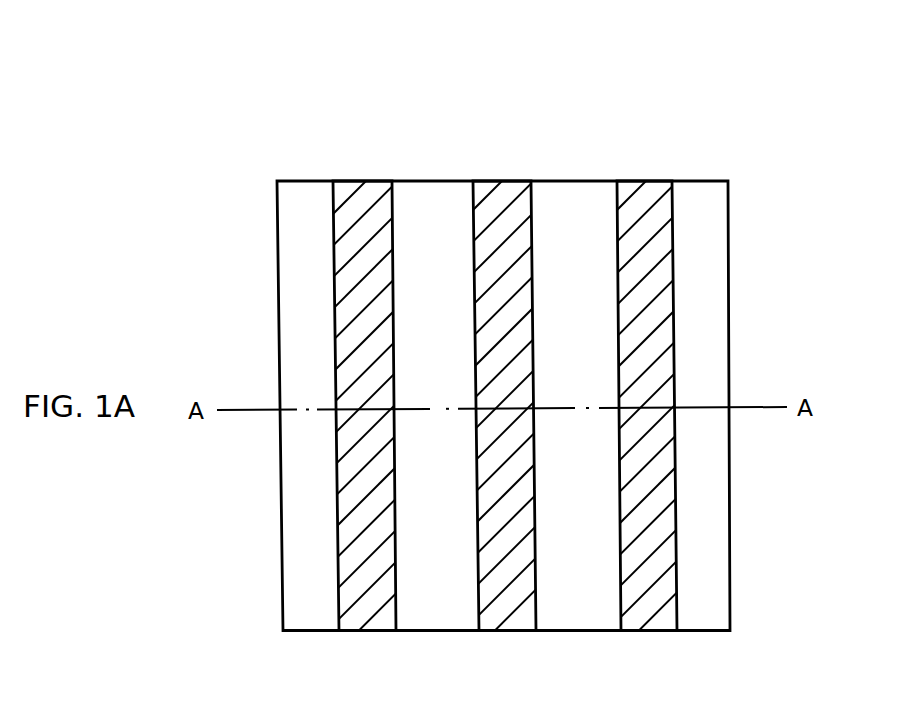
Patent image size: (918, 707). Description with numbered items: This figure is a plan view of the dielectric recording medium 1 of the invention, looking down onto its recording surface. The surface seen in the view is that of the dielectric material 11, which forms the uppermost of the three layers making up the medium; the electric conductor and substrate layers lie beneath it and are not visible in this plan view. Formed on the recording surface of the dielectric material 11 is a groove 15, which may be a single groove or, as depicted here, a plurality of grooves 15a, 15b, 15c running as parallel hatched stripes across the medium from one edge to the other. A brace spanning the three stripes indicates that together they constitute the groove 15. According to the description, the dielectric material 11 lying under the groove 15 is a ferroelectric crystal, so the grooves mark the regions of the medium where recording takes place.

The dielectric recording medium 1 is at (754, 181).
The dielectric material 11 is at (713, 330).
The groove 15 is at (683, 73).
The groove 15a is at (361, 198).
The groove 15b is at (503, 198).
The groove 15c is at (645, 200).